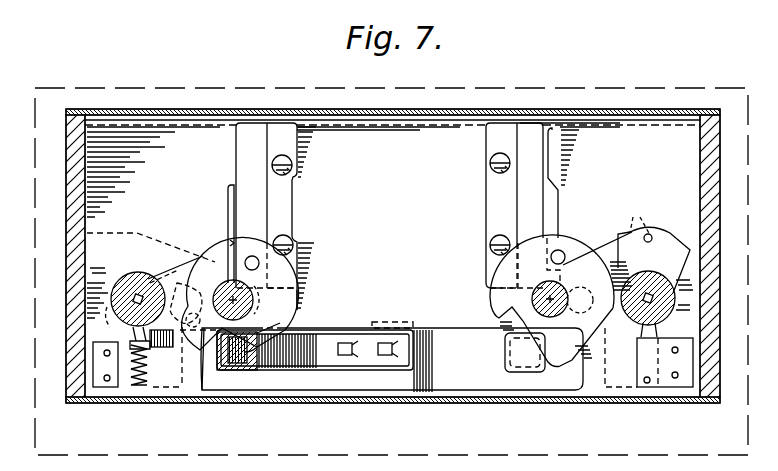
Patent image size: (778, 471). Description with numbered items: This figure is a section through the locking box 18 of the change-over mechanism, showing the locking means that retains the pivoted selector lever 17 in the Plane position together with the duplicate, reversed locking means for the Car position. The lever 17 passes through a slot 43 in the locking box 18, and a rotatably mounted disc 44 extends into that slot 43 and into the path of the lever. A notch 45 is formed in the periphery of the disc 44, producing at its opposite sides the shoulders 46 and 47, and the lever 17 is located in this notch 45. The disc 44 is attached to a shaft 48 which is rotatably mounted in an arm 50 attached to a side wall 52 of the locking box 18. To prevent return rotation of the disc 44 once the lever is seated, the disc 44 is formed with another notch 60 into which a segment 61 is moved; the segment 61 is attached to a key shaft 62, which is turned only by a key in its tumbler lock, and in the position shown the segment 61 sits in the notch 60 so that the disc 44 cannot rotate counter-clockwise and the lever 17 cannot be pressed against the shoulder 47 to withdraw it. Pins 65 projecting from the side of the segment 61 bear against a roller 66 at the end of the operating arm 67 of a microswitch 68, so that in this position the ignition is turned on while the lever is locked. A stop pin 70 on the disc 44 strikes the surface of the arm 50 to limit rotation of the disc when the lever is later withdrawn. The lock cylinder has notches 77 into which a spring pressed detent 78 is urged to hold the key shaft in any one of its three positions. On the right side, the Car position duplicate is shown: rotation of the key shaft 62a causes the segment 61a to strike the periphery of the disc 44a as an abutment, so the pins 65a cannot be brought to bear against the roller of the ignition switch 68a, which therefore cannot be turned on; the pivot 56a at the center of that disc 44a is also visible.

The locking box 18 is at (184, 110).
The side wall 52 is at (89, 207).
The operating arm 67 is at (228, 198).
The microswitch 68 is at (292, 202).
The ignition switch 68a is at (499, 209).
The arm 50 is at (153, 242).
The segment 61 is at (180, 257).
The shaft 48 is at (222, 241).
The stop pin 70 is at (253, 256).
The key shaft 62 is at (131, 281).
The pins 65 is at (185, 299).
The roller 66 is at (219, 286).
The notch 60 is at (190, 327).
The notch 45 is at (257, 325).
The disc 44 is at (294, 297).
The shoulder 47 is at (294, 320).
The notches 77 is at (130, 328).
The spring pressed detent 78 is at (149, 340).
The shoulder 46 is at (199, 396).
The slot 43 is at (263, 386).
The selector lever 17 is at (318, 373).
The disc 44a is at (577, 241).
The pins 65a is at (645, 216).
The segment 61a is at (674, 233).
The pivot pin 56a is at (586, 311).
The key shaft 62a is at (662, 312).